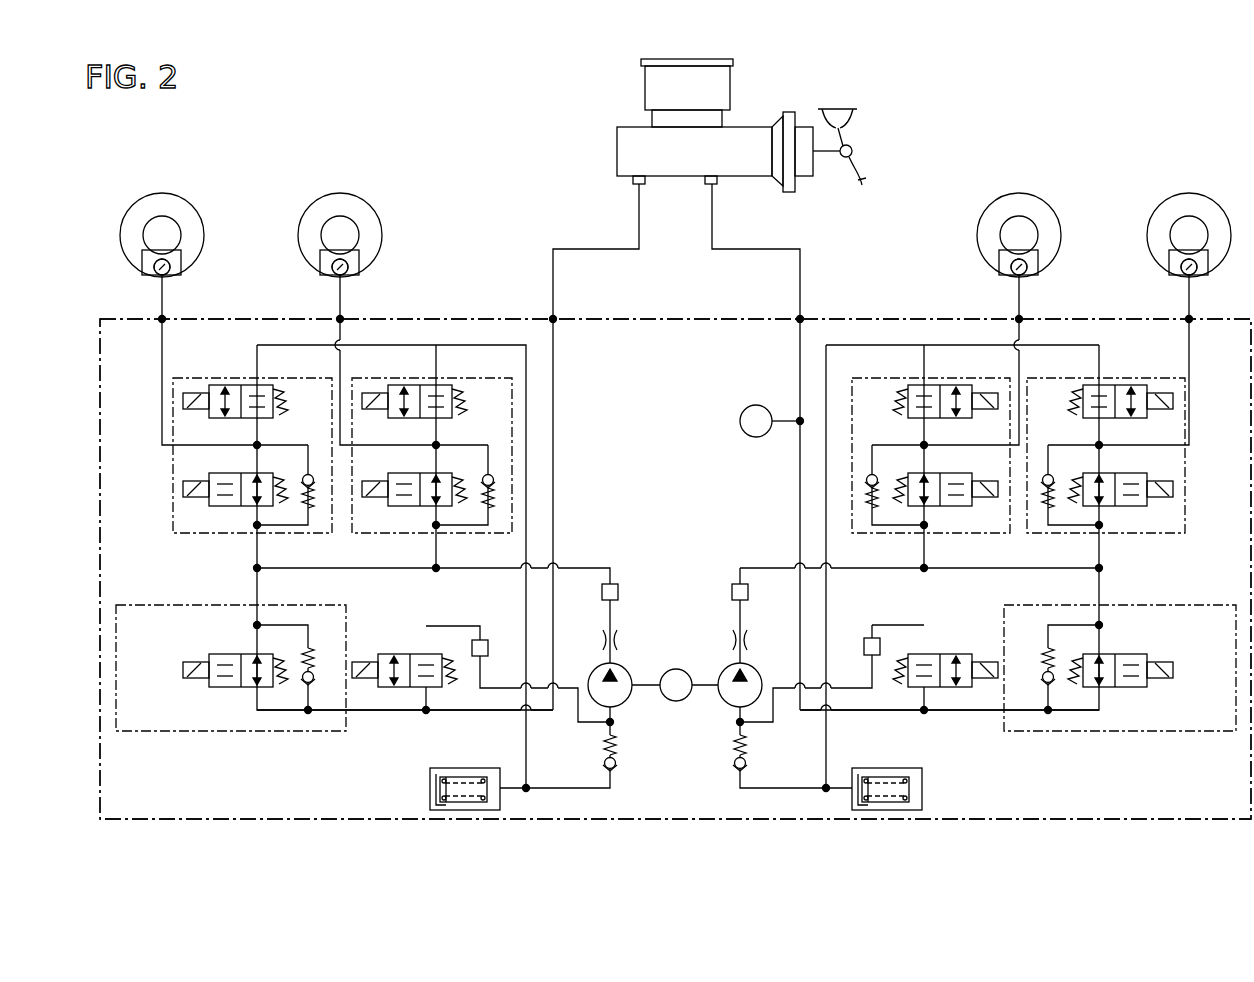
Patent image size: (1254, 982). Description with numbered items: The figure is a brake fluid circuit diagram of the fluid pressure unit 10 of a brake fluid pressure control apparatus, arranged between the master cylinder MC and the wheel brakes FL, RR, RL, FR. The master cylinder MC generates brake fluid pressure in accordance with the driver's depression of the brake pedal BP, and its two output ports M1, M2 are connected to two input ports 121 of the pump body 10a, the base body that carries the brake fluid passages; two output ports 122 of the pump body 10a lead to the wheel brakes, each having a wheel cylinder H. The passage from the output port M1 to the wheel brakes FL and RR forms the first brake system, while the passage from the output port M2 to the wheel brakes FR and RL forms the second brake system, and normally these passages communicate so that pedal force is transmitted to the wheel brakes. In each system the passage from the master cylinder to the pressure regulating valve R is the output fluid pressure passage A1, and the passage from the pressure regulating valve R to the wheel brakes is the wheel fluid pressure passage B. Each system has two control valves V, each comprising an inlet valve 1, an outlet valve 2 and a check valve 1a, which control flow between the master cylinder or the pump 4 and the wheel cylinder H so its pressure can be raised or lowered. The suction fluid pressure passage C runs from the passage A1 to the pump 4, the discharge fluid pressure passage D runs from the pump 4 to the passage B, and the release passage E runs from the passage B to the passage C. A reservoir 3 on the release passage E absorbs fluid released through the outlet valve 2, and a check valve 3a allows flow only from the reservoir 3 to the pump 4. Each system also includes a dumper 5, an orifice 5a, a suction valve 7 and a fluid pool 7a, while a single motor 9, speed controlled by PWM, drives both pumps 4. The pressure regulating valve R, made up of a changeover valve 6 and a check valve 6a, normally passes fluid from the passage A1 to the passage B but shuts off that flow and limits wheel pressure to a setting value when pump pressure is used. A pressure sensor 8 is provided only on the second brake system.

The inlet valve 1 is at (218, 506).
The check valve 1a is at (308, 472).
The outlet valve 2 is at (268, 385).
The reservoir 3 is at (428, 798).
The check valve 3a is at (618, 765).
The pump 4 is at (628, 700).
The dumper 5 is at (618, 590).
The orifice 5a is at (621, 640).
The changeover valve 6 is at (218, 688).
The check valve 6a is at (314, 676).
The suction valve 7 is at (385, 654).
The fluid pool 7a is at (488, 645).
The pressure sensor 8 is at (740, 421).
The motor 9 is at (676, 669).
The fluid pressure unit 10 is at (873, 303).
The pump body 10a is at (275, 819).
The input port 121 is at (551, 319).
The output port 122 is at (164, 319).
The wheel brake at front left wheel FL is at (162, 193).
The wheel brake at rear right wheel RR is at (340, 193).
The wheel brake at rear left wheel RL is at (1019, 193).
The wheel brake at front right wheel FR is at (1189, 193).
The wheel cylinder H is at (170, 267).
The master cylinder MC is at (617, 150).
The brake pedal BP is at (862, 186).
The output port M1 is at (635, 185).
The output port M2 is at (714, 185).
The wheel fluid pressure passage B is at (163, 345).
The release passage E is at (436, 345).
The output fluid pressure passage A1 is at (553, 385).
The discharge fluid pressure passage D is at (578, 568).
The suction fluid pressure passage C is at (460, 688).
The control valve V is at (462, 378).
The pressure regulating valve R is at (153, 733).